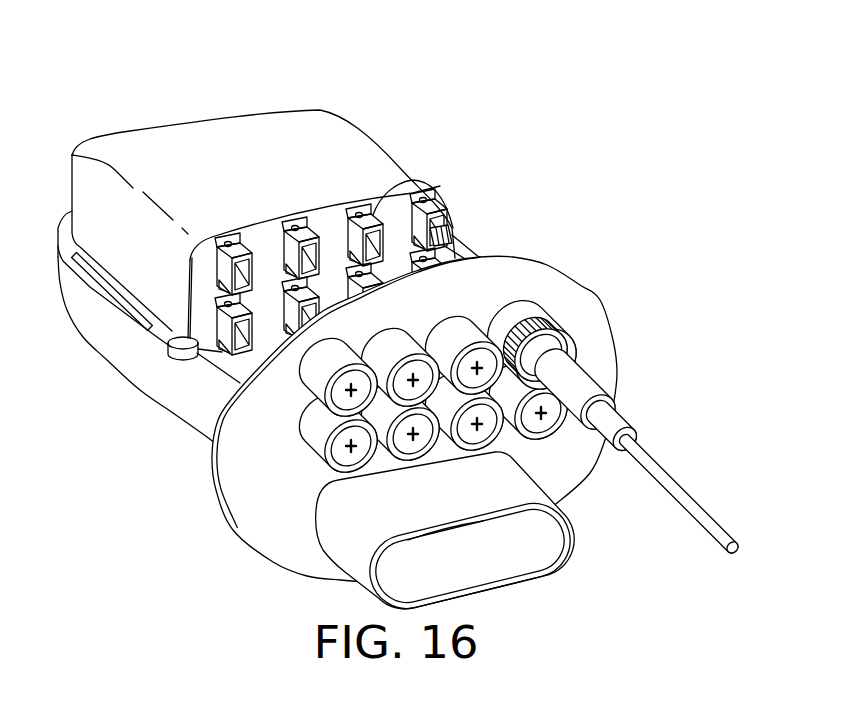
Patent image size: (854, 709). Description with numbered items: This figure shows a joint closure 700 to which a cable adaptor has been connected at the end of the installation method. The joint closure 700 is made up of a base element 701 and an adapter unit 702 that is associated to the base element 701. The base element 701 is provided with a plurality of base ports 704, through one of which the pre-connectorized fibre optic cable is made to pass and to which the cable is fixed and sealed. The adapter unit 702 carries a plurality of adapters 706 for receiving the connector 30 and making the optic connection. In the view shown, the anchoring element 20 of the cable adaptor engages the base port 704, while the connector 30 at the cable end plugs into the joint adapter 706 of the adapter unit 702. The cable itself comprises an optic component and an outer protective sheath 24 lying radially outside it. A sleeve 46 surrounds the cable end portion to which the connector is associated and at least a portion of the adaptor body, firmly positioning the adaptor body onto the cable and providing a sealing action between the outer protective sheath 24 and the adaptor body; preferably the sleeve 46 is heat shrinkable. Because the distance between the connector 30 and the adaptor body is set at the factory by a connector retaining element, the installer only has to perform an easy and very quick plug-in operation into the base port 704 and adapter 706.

The joint closure 700 is at (129, 109).
The adapter unit 702 is at (342, 117).
The adapter 706 is at (387, 195).
The connector 30 is at (450, 235).
The base port 704 is at (538, 317).
The anchoring element 20 is at (570, 332).
The sleeve 46 is at (623, 437).
The outer protective sheath 24 is at (688, 502).
The base element 701 is at (240, 537).